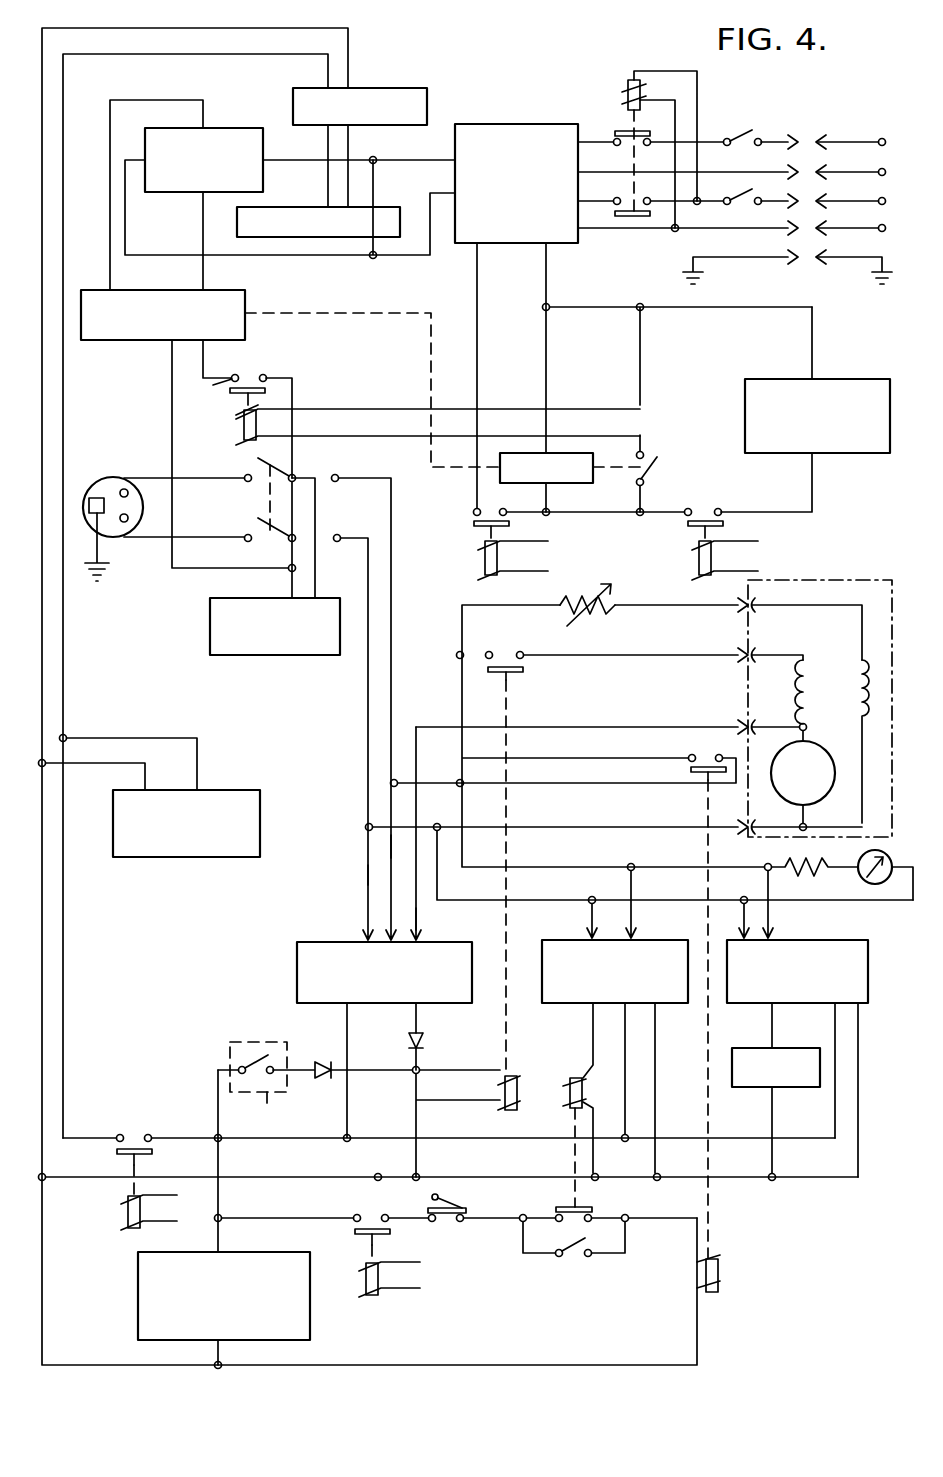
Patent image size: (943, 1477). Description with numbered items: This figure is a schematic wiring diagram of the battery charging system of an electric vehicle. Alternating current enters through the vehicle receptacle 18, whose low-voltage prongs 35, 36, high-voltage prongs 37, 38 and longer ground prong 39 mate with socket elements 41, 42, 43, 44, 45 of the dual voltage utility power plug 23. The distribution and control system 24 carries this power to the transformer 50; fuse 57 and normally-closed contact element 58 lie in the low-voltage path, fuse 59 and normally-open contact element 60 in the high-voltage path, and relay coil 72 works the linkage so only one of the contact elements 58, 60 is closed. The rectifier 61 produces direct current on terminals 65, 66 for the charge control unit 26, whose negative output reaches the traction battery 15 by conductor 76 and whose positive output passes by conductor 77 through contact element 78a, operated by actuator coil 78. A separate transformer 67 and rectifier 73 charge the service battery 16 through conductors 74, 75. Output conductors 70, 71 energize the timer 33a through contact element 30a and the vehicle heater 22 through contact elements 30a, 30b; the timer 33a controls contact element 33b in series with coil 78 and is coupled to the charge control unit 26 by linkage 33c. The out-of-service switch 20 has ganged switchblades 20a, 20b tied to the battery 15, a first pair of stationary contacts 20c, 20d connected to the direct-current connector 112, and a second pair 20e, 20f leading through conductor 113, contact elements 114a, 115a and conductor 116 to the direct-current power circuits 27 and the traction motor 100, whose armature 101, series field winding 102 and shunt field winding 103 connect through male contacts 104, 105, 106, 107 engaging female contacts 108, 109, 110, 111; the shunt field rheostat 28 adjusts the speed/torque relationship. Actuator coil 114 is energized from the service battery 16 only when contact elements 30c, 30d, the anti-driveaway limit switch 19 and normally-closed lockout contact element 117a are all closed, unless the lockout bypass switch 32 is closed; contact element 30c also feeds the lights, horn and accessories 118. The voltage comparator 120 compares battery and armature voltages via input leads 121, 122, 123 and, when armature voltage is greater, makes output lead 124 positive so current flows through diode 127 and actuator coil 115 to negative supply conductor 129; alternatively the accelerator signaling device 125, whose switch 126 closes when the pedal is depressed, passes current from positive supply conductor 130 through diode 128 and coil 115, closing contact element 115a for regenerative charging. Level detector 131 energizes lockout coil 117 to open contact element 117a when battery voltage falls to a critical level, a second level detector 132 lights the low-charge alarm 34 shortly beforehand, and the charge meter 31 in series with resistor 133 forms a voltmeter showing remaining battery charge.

The vehicle traction battery 15 is at (210, 611).
The service battery 16 is at (248, 790).
The alternating-current power receptacle 18 is at (800, 124).
The anti-driveaway limit switch 19 is at (466, 1203).
The out-of-service switch 20 is at (305, 512).
The movable switchblade 20a is at (255, 461).
The movable switchblade 20b is at (256, 519).
The stationary contact 20c is at (246, 481).
The stationary contact 20d is at (247, 542).
The stationary contact 20e is at (337, 475).
The stationary contact 20f is at (337, 542).
The vehicle heater 22 is at (840, 379).
The dual voltage utility power plug 23 is at (848, 124).
The alternating-current distribution and control system 24 is at (598, 392).
The charge control unit 26 is at (243, 294).
The direct-current power circuits 27 is at (628, 706).
The shunt field rheostat 28 is at (592, 616).
The normally-open contact element 30a is at (470, 534).
The normally-open contact element 30b is at (710, 518).
The normally-open contact element 30c is at (138, 1136).
The normally-open contact element 30d is at (362, 1217).
The charge meter 31 is at (889, 860).
The lockout bypass switch 32 is at (609, 1252).
The timer 33a is at (556, 483).
The contact element 33b is at (652, 466).
The linkage 33c is at (355, 320).
The low-charge alarm light 34 is at (752, 1087).
The low-voltage contact prong 35 is at (792, 149).
The low-voltage contact prong 36 is at (792, 179).
The high-voltage contact prong 37 is at (792, 208).
The high-voltage contact prong 38 is at (792, 235).
The ground prong 39 is at (792, 264).
The socket element 41 is at (818, 146).
The socket element 42 is at (818, 176).
The socket element 43 is at (818, 205).
The socket element 44 is at (818, 232).
The socket element 45 is at (818, 261).
The power transformer 50 is at (510, 124).
The protective fuse 57 is at (745, 138).
The normally-closed contact element 58 is at (622, 130).
The protective fuse 59 is at (740, 204).
The normally-open contact element 60 is at (630, 200).
The rectifier 61 is at (218, 128).
The rectifier output terminal 65 is at (203, 246).
The rectifier output terminal 66 is at (110, 262).
The transformer 67 is at (316, 207).
The output conductor 70 is at (477, 290).
The output conductor 71 is at (547, 290).
The relay coil 72 is at (627, 86).
The rectifier 73 is at (385, 90).
The conductor 74 is at (228, 58).
The conductor 75 is at (247, 32).
The conductor 76 is at (172, 404).
The conductor 77 is at (214, 388).
The actuator coil 78 is at (238, 432).
The normally-open contact element 78a is at (257, 378).
The traction motor 100 is at (796, 580).
The armature 101 is at (822, 752).
The series field winding 102 is at (810, 668).
The shunt field winding 103 is at (858, 702).
The male connector contact 104 is at (752, 610).
The male connector contact 105 is at (756, 664).
The male connector contact 106 is at (756, 726).
The male connector contact 107 is at (754, 823).
The female connector contact 108 is at (728, 612).
The female connector contact 109 is at (728, 658).
The female connector contact 110 is at (730, 726).
The female connector contact 111 is at (728, 832).
The direct-current connector 112 is at (104, 478).
The conductor 113 is at (392, 593).
The actuator coil 114 is at (722, 1273).
The normally-open contact element 114a is at (690, 771).
The actuator coil 115 is at (507, 1076).
The contact element 115a is at (514, 676).
The conductor 116 is at (550, 827).
The actuator coil 117 is at (571, 1082).
The normally-closed contact element 117a is at (588, 1210).
The lights, horn and accessories 118 is at (312, 1312).
The voltage comparator 120 is at (343, 942).
The input lead 121 is at (366, 874).
The input lead 122 is at (388, 846).
The input lead 123 is at (418, 922).
The output lead 124 is at (421, 1017).
The accelerator signaling device 125 is at (255, 1109).
The normally-open switch 126 is at (258, 1052).
The diode 127 is at (425, 1041).
The diode 128 is at (320, 1062).
The negative voltage supply conductor 129 is at (329, 1177).
The positive voltage supply conductor 130 is at (316, 1138).
The level detector 131 is at (646, 940).
The second level detector 132 is at (826, 940).
The resistor 133 is at (812, 878).